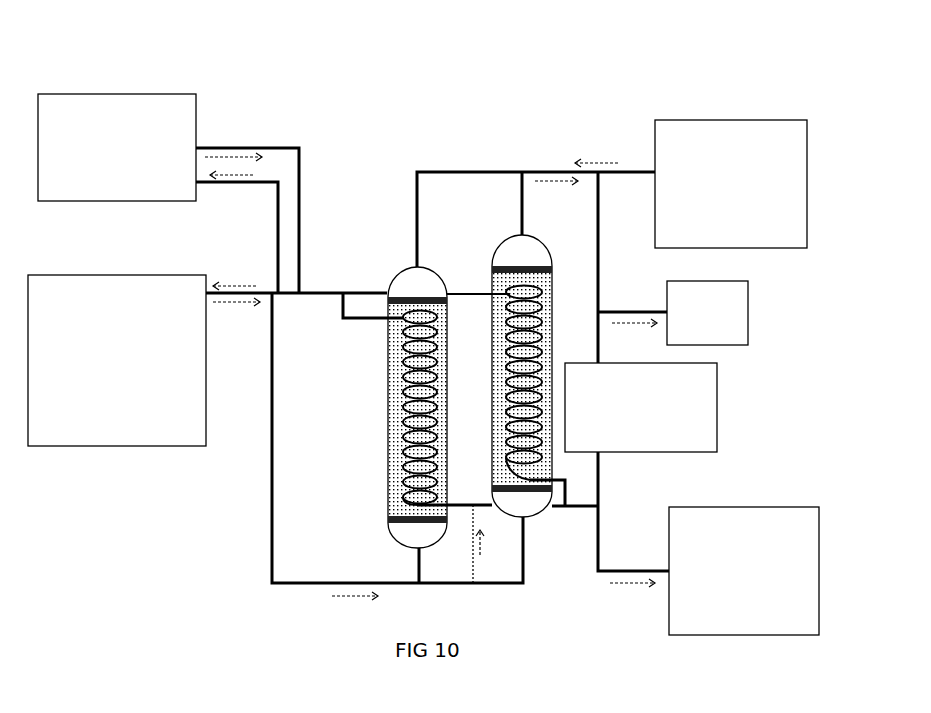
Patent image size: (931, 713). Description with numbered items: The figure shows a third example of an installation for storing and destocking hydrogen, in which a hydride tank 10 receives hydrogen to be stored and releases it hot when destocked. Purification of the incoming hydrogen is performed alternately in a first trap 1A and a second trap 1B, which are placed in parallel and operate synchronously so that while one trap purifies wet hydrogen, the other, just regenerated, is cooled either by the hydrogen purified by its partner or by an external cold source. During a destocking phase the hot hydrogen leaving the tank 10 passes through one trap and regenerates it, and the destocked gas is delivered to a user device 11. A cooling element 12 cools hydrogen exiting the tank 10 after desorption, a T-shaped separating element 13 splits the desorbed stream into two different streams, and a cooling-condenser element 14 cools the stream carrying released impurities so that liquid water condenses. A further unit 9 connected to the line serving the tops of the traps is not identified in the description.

The first trap 1A is at (401, 285).
The second trap 1B is at (520, 259).
The heat source 9 is at (738, 138).
The hydride tank 10 is at (106, 292).
The user device 11 is at (768, 512).
The cooling element 12 is at (122, 110).
The separating element 13 is at (738, 290).
The cooling-condenser element 14 is at (710, 410).